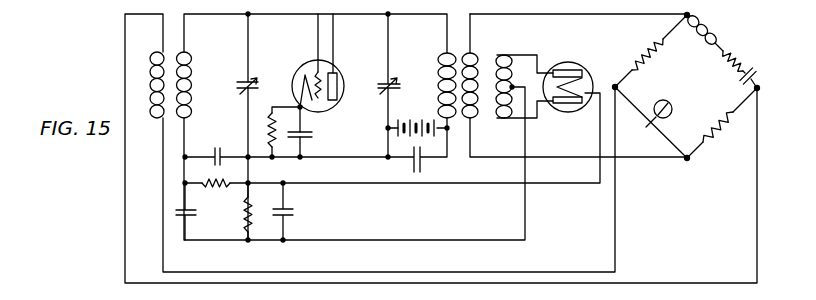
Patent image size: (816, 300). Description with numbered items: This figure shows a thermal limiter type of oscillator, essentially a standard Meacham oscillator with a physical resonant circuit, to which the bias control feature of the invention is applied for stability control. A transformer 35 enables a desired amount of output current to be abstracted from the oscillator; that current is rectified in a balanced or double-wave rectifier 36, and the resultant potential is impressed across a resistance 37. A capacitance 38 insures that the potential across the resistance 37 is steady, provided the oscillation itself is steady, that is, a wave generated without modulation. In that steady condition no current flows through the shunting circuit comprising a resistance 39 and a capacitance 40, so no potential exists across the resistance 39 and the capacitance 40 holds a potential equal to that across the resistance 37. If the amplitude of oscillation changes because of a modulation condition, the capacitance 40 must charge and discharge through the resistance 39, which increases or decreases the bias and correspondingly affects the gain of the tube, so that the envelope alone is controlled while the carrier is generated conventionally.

The transformer 35 is at (485, 68).
The balanced or double-wave rectifier 36 is at (580, 64).
The resistance 37 is at (242, 224).
The capacitance 38 is at (298, 215).
The resistance 39 is at (218, 190).
The capacitance 40 is at (178, 211).